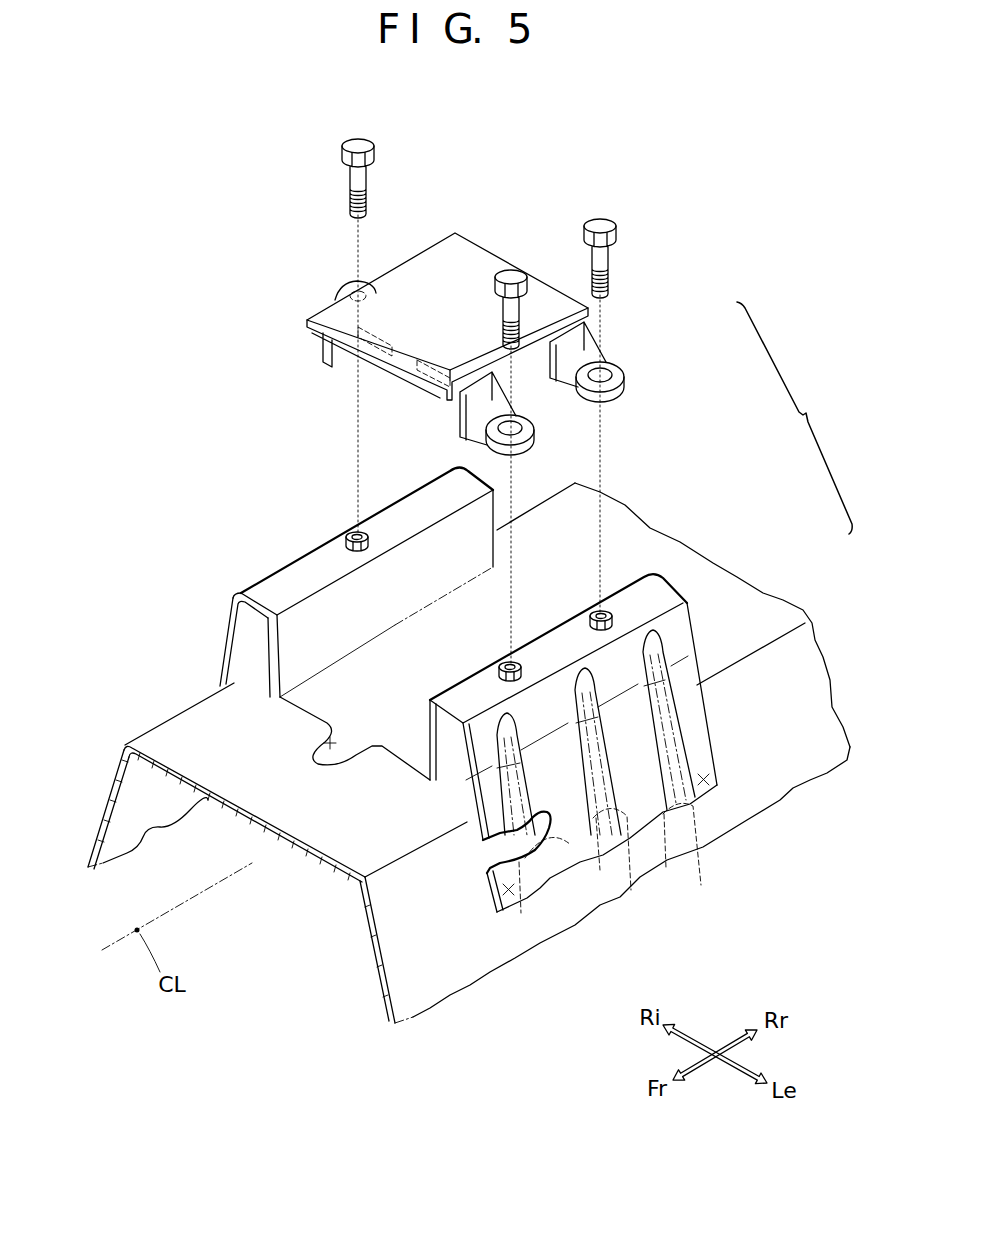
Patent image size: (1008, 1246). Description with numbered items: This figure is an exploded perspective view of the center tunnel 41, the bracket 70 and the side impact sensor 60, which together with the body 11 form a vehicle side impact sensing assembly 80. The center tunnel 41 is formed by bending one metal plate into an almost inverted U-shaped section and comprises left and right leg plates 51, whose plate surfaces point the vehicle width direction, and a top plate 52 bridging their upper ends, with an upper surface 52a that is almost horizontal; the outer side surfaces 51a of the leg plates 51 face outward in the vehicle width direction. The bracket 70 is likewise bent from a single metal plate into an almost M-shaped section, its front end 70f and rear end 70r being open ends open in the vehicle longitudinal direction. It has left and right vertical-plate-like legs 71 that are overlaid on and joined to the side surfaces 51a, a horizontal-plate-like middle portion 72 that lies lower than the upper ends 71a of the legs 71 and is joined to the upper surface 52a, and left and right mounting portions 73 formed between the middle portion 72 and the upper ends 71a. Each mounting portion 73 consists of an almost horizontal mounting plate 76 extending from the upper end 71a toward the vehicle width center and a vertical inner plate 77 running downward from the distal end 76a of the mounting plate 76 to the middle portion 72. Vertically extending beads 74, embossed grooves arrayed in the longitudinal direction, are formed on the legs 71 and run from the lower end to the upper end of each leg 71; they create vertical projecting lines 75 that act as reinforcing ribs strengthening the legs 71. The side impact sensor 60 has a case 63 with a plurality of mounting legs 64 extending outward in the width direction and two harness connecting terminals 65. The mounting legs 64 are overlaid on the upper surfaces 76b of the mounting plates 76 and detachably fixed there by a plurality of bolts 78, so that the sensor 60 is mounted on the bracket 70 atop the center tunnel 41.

The body 11 is at (791, 585).
The center tunnel 41 is at (460, 768).
The leg plates 51 is at (142, 827).
The side surfaces 51a is at (95, 828).
The top plate 52 is at (243, 813).
The upper surface 52a is at (300, 838).
The side impact sensor 60 is at (499, 326).
The case 63 is at (468, 263).
The mounting legs 64 is at (335, 293).
The harness connecting terminals 65 is at (390, 378).
The bracket 70 is at (463, 708).
The front end 70f is at (226, 650).
The rear end 70r is at (498, 512).
The legs 71 is at (243, 625).
The upper ends 71a is at (237, 593).
The middle portion 72 is at (382, 747).
The mounting portions 73 is at (432, 604).
The beads 74 is at (263, 680).
The projecting lines 75 is at (548, 880).
The mounting plates 76 is at (258, 595).
The distal ends 76a is at (340, 538).
The upper surfaces 76b is at (420, 503).
The inner plates 77 is at (312, 610).
The bolts 78 is at (358, 140).
The vehicle side impact sensing assembly 80 is at (794, 418).